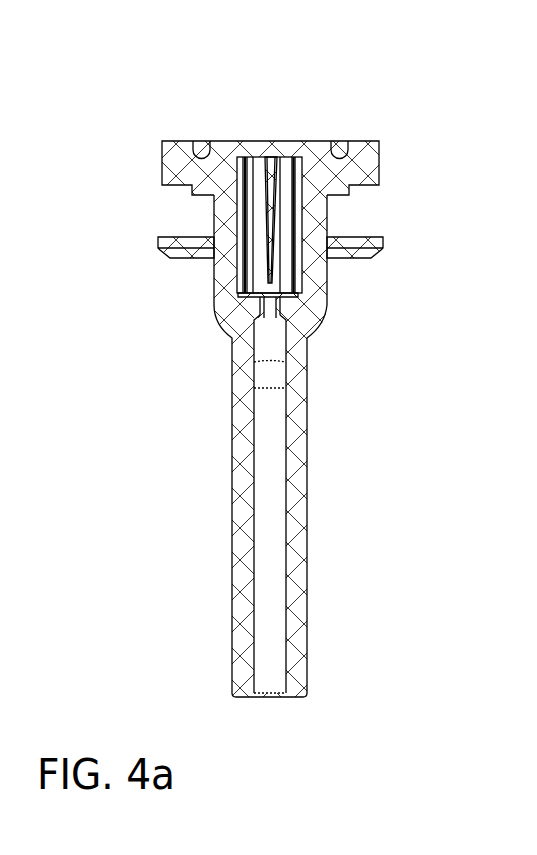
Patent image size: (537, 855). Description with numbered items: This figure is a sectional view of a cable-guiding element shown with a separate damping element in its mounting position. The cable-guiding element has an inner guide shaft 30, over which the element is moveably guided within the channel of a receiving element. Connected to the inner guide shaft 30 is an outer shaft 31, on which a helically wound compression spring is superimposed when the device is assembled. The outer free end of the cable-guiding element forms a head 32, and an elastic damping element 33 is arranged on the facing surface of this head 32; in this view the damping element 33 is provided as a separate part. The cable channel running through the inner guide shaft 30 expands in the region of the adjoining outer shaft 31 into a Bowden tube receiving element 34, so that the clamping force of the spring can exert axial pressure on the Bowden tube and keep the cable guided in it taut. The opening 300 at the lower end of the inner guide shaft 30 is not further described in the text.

The inner guide shaft 30 is at (297, 550).
The outer shaft 31 is at (232, 270).
The head 32 is at (362, 162).
The damping element 33 is at (362, 241).
The Bowden tube receiving element 34 is at (263, 190).
The outlet opening 300 is at (300, 690).